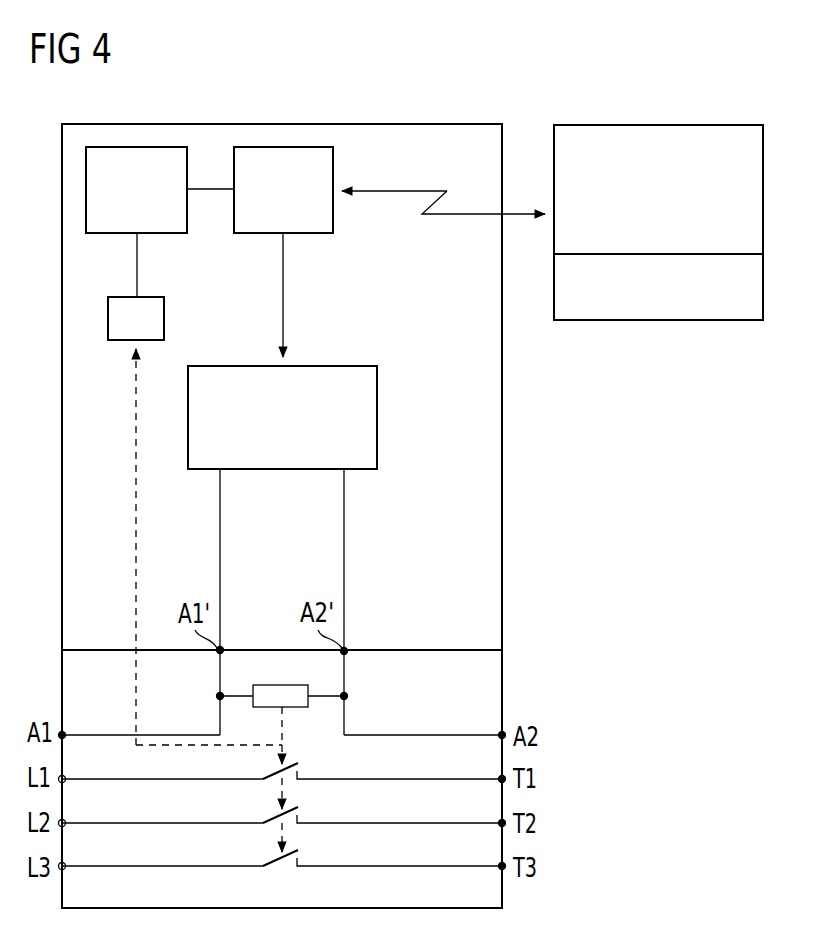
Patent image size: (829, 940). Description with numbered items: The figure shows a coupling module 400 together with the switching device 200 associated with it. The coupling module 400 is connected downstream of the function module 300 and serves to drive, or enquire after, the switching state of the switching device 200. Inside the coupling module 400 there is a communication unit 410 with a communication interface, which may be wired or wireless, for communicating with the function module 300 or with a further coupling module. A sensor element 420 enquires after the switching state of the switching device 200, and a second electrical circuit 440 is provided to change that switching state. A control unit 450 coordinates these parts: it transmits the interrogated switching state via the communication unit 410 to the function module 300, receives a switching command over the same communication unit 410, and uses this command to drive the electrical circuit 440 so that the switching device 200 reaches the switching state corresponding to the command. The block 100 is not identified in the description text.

The higher-level control device 100 is at (658, 312).
The switching device 200 is at (500, 680).
The function module 300 is at (658, 132).
The coupling module 400 is at (495, 433).
The communication unit 410 is at (305, 233).
The sensor element 420 is at (122, 340).
The second electrical circuit 440 is at (377, 417).
The control unit 450 is at (175, 233).